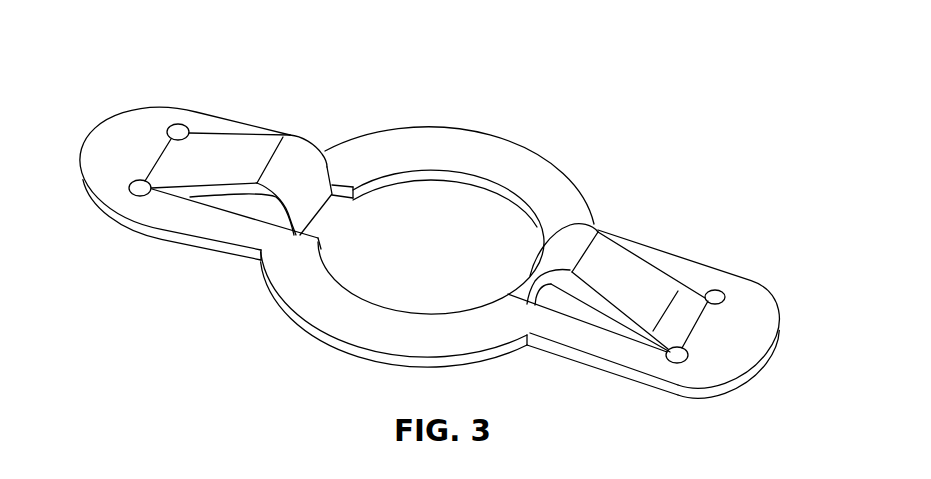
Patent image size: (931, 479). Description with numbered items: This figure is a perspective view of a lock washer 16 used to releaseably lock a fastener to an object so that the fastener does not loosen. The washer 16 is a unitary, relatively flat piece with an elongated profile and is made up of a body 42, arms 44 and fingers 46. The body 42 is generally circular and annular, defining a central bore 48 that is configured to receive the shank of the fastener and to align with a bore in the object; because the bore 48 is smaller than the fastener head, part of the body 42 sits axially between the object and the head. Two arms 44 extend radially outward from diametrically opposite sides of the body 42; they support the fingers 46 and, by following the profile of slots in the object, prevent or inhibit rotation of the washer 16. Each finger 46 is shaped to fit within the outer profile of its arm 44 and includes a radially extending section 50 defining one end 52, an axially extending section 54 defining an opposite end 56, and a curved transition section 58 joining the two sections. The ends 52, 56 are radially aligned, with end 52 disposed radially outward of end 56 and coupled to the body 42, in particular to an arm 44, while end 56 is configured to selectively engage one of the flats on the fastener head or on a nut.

The washer 16 is at (634, 157).
The body 42 is at (510, 333).
The arm 44 is at (756, 312).
The finger 46 is at (632, 268).
The bore 48 is at (475, 219).
The radially extending section 50 is at (688, 305).
The end 52 is at (705, 296).
The axially extending section 54 is at (533, 288).
The end 56 is at (333, 227).
The curved transition section 58 is at (572, 234).